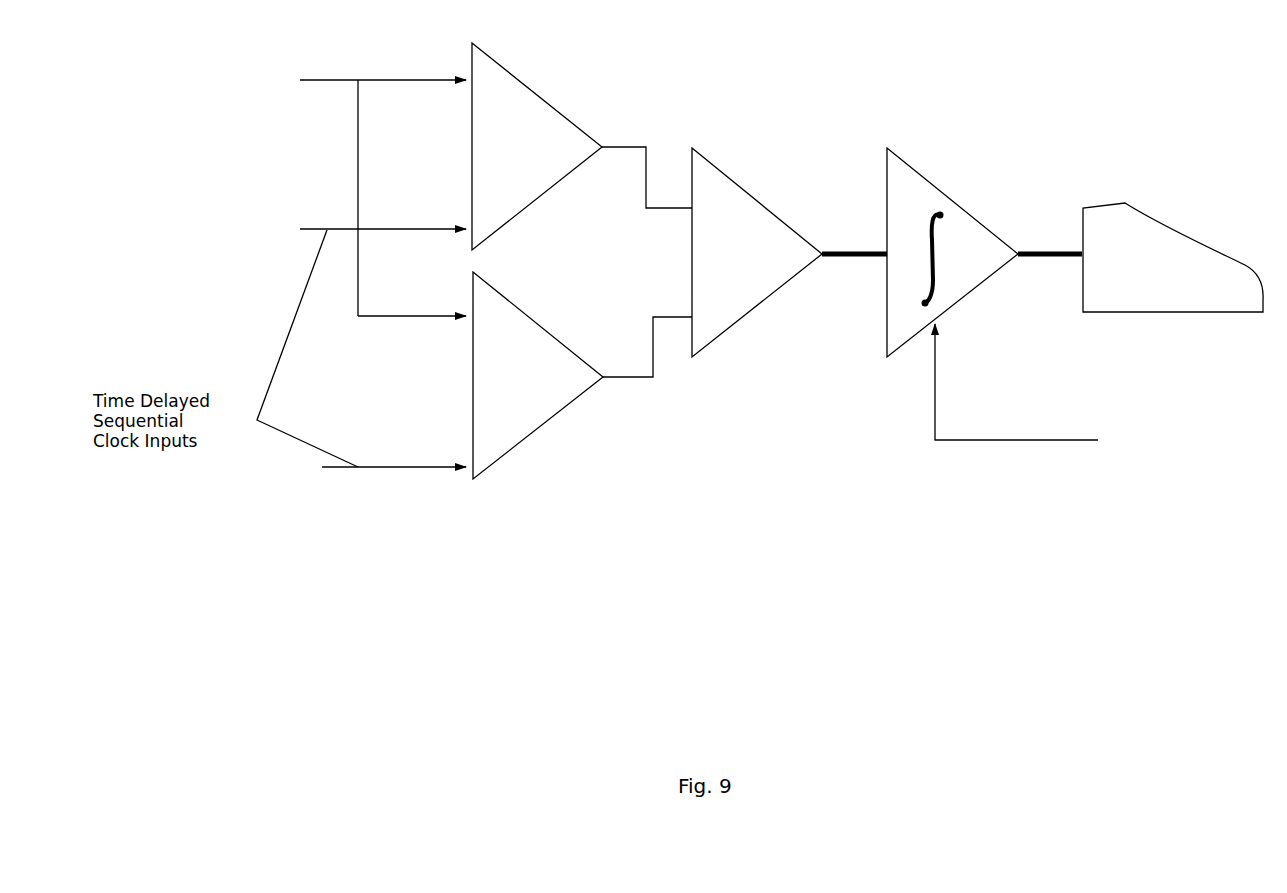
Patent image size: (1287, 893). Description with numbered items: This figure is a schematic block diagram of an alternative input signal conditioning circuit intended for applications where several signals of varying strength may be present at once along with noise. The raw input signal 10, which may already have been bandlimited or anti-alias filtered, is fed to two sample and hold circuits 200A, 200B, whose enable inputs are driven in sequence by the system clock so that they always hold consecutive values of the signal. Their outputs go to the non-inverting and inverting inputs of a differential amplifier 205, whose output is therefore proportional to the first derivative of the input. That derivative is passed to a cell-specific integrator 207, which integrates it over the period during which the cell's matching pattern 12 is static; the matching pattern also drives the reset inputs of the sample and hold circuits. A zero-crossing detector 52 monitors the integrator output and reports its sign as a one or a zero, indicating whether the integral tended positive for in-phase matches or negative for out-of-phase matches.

The input signal 10 is at (325, 80).
The matching pattern 12 is at (1030, 440).
The sample and hold circuit 200A is at (528, 84).
The sample and hold circuit 200B is at (550, 420).
The differential amplifier circuit 205 is at (750, 196).
The integrator 207 is at (950, 196).
The zero-crossing detector 52 is at (1160, 220).